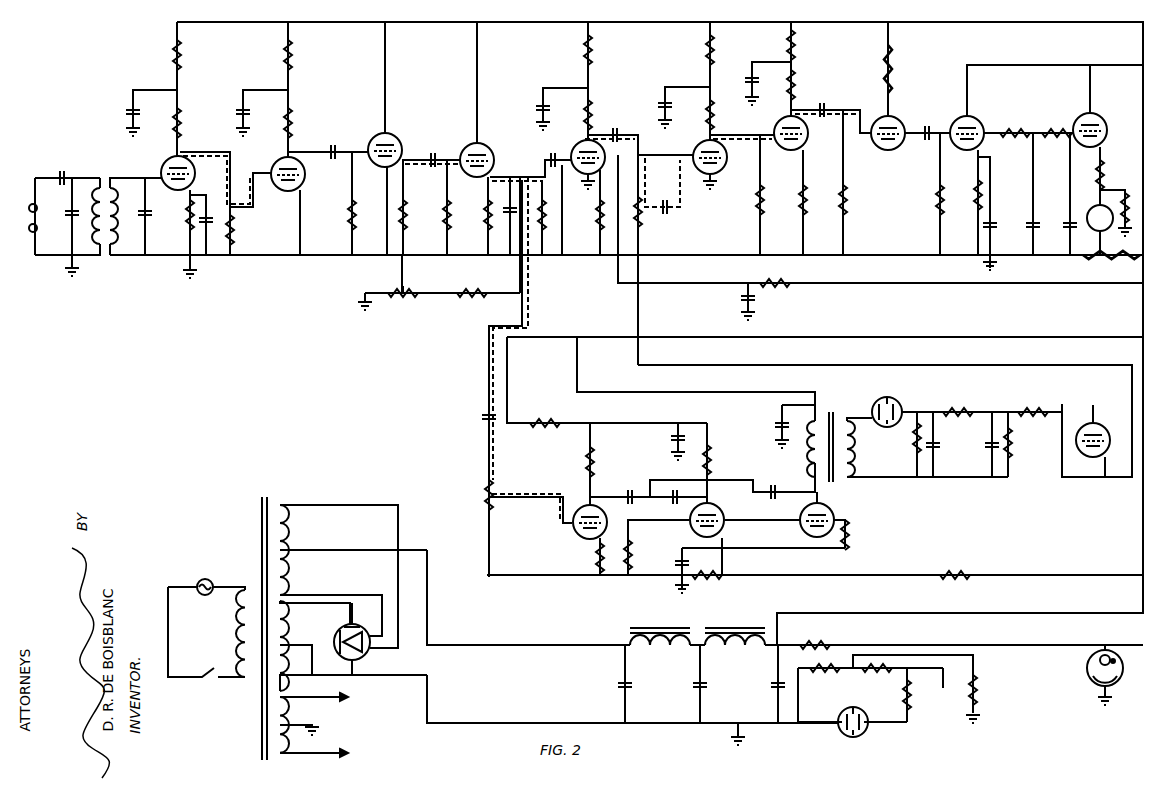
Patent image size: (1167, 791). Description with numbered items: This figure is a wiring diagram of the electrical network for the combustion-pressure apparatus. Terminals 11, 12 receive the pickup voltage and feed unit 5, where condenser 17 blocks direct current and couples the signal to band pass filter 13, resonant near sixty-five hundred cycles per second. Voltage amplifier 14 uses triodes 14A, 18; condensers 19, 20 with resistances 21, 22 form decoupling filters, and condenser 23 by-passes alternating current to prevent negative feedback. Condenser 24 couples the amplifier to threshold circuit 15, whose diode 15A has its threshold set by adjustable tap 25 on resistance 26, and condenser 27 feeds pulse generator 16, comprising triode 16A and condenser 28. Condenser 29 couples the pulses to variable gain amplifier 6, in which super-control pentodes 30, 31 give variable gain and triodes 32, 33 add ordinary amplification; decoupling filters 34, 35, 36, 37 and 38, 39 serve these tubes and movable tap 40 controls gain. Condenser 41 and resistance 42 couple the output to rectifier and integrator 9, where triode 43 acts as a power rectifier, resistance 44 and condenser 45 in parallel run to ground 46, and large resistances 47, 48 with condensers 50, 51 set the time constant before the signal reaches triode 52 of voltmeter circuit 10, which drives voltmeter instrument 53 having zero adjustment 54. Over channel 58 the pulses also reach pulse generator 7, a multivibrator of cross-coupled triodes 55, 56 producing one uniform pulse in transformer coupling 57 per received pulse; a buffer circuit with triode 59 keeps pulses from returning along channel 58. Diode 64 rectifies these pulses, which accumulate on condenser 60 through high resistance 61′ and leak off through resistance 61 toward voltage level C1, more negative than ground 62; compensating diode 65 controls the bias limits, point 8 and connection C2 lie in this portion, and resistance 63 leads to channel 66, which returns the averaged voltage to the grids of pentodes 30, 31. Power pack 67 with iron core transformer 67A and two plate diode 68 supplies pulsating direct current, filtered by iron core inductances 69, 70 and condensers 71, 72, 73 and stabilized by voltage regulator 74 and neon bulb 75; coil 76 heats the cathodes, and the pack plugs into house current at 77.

The unit 5 is at (145, 258).
The variable gain amplifier 6 is at (588, 258).
The pulse generator 7 is at (745, 481).
The output terminal 8 is at (1057, 397).
The rectifier and integrator 9 is at (1012, 250).
The voltmeter circuit 10 is at (1120, 70).
The terminal 11 is at (44, 230).
The terminal 12 is at (44, 216).
The band pass filter 13 is at (92, 176).
The voltage amplifier 14 is at (178, 190).
The triode 14A is at (167, 160).
The threshold circuit 15 is at (388, 132).
The diode 15A is at (374, 139).
The pulse generator 16 is at (480, 142).
The triode 16A is at (468, 142).
The condenser 17 is at (60, 175).
The triode 18 is at (298, 186).
The condenser 19 is at (128, 114).
The condenser 20 is at (240, 114).
The resistance 21 is at (180, 62).
The resistance 22 is at (290, 62).
The gain increasing condenser 23 is at (208, 232).
The condenser 24 is at (330, 146).
The adjustable tap 25 is at (398, 290).
The resistance 26 is at (402, 294).
The condenser 27 is at (436, 152).
The condenser 28 is at (507, 225).
The condenser 29 is at (548, 176).
The pentode 30 is at (590, 178).
The pentode 31 is at (705, 182).
The triode 32 is at (800, 148).
The triode 33 is at (884, 148).
The decoupling filter condenser 34 is at (541, 112).
The decoupling filter resistance 35 is at (590, 58).
The decoupling filter condenser 36 is at (663, 110).
The decoupling filter resistance 37 is at (708, 56).
The decoupling filter condenser 38 is at (748, 88).
The decoupling filter resistance 39 is at (795, 44).
The movable tap 40 is at (666, 212).
The condenser 41 is at (927, 128).
The resistance 42 is at (937, 205).
The triode 43 is at (975, 120).
The resistance 44 is at (976, 196).
The condenser 45 is at (987, 236).
The ground 46 is at (997, 262).
The resistance 47 is at (1006, 128).
The resistance 48 is at (1046, 128).
The condenser 50 is at (1036, 222).
The condenser 51 is at (1068, 220).
The triode 52 is at (1106, 140).
The voltmeter instrument 53 is at (1096, 205).
The zero adjustment 54 is at (1111, 231).
The triode 55 is at (690, 534).
The triode 56 is at (837, 513).
The transformer coupling 57 is at (818, 412).
The channel 58 is at (484, 440).
The triode 59 is at (587, 503).
The condenser 60 is at (988, 444).
The resistance 61 is at (1012, 441).
The resistance 61′ is at (957, 408).
The ground 62 is at (943, 674).
The resistance 63 is at (1032, 408).
The diode 64 is at (896, 404).
The compensating diode 65 is at (1098, 428).
The channel 66 is at (641, 309).
The power pack 67 is at (258, 560).
The iron core transformer 67A is at (262, 510).
The two plate diode 68 is at (368, 656).
The iron core inductance 69 is at (680, 628).
The iron core inductance 70 is at (772, 628).
The condenser 71 is at (622, 688).
The condenser 72 is at (697, 688).
The condenser 73 is at (775, 688).
The voltage regulator 74 is at (1087, 668).
The neon bulb 75 is at (842, 716).
The coil 76 is at (296, 712).
The plug 77 is at (157, 632).
The voltage level C1 is at (992, 480).
The control contact C2 is at (1092, 420).